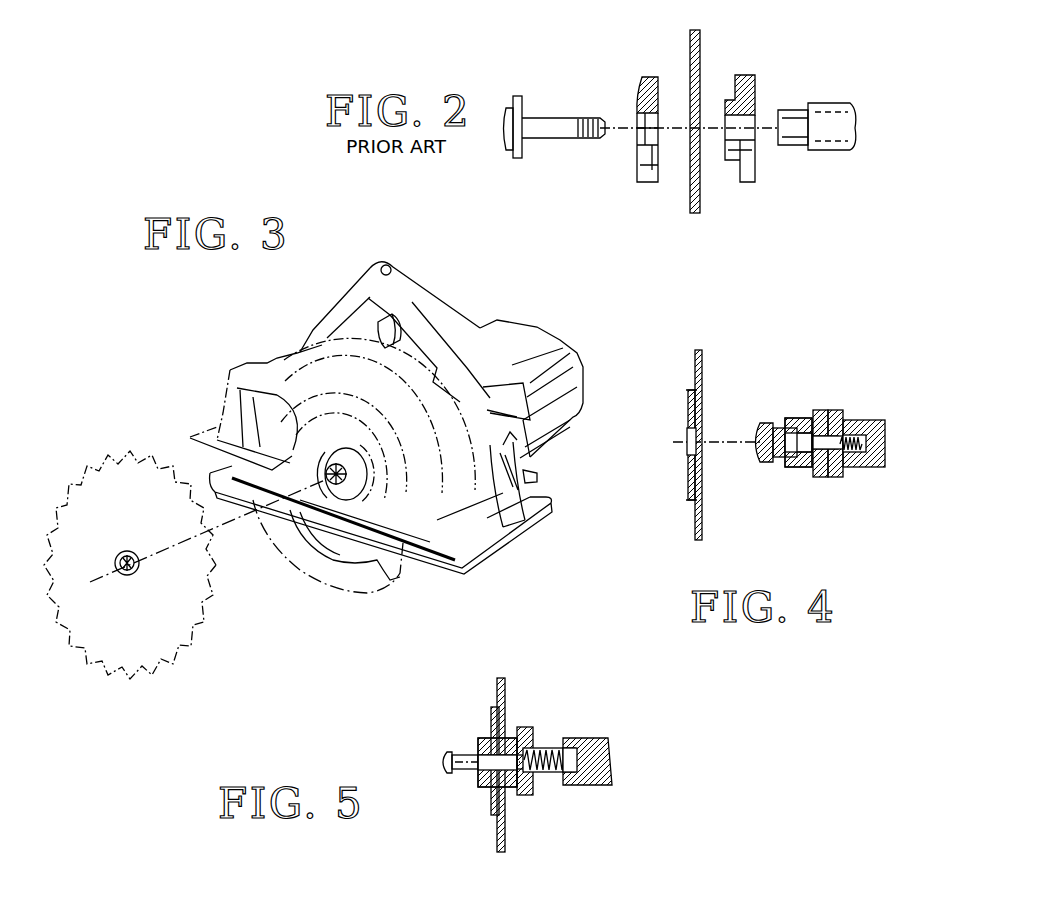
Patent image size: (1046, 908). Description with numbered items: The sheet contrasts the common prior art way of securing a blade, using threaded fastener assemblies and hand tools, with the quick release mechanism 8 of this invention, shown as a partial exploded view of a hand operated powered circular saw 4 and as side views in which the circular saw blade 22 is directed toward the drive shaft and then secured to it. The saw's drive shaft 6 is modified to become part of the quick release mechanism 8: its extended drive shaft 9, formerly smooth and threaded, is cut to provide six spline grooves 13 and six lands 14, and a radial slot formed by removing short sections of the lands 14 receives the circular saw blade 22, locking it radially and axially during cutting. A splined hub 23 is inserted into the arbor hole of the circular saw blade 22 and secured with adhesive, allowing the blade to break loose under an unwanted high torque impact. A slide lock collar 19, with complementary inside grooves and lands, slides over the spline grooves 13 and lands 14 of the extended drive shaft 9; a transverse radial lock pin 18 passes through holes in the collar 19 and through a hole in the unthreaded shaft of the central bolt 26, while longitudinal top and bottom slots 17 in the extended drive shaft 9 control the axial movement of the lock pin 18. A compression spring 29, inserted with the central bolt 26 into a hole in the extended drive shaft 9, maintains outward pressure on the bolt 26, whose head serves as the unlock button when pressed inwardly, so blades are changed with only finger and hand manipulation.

In FIG. 3, the hand operated powered circular saw 4 is at (482, 278).
In FIG. 2, the drive shaft 6 is at (832, 104).
In FIG. 4, the drive shaft 6 is at (878, 467).
In FIG. 5, the drive shaft 6 is at (600, 750).
In FIG. 3, the quick release mechanism 8 is at (334, 458).
In FIG. 4, the quick release mechanism 8 is at (814, 420).
In FIG. 5, the quick release mechanism 8 is at (526, 735).
In FIG. 4, the extended drive shaft 9 is at (813, 455).
In FIG. 5, the extended drive shaft 9 is at (553, 775).
In FIG. 4, the spline grooves 13 is at (800, 467).
In FIG. 5, the spline grooves 13 is at (480, 782).
In FIG. 4, the lands 14 is at (798, 442).
In FIG. 5, the lands 14 is at (497, 762).
In FIG. 4, the longitudinal top and bottom slots 17 is at (823, 413).
In FIG. 4, the lock pin 18 is at (822, 477).
In FIG. 5, the lock pin 18 is at (533, 735).
In FIG. 4, the slide lock collar 19 is at (820, 432).
In FIG. 2, the circular saw blade 22 is at (701, 42).
In FIG. 3, the circular saw blade 22 is at (218, 648).
In FIG. 4, the circular saw blade 22 is at (702, 360).
In FIG. 5, the circular saw blade 22 is at (500, 680).
In FIG. 3, the splined hub 23 is at (130, 578).
In FIG. 4, the splined hub 23 is at (689, 415).
In FIG. 5, the splined hub 23 is at (493, 797).
In FIG. 4, the central bolt 26 is at (773, 440).
In FIG. 5, the central bolt 26 is at (445, 752).
In FIG. 4, the compression spring 29 is at (850, 437).
In FIG. 5, the compression spring 29 is at (572, 777).